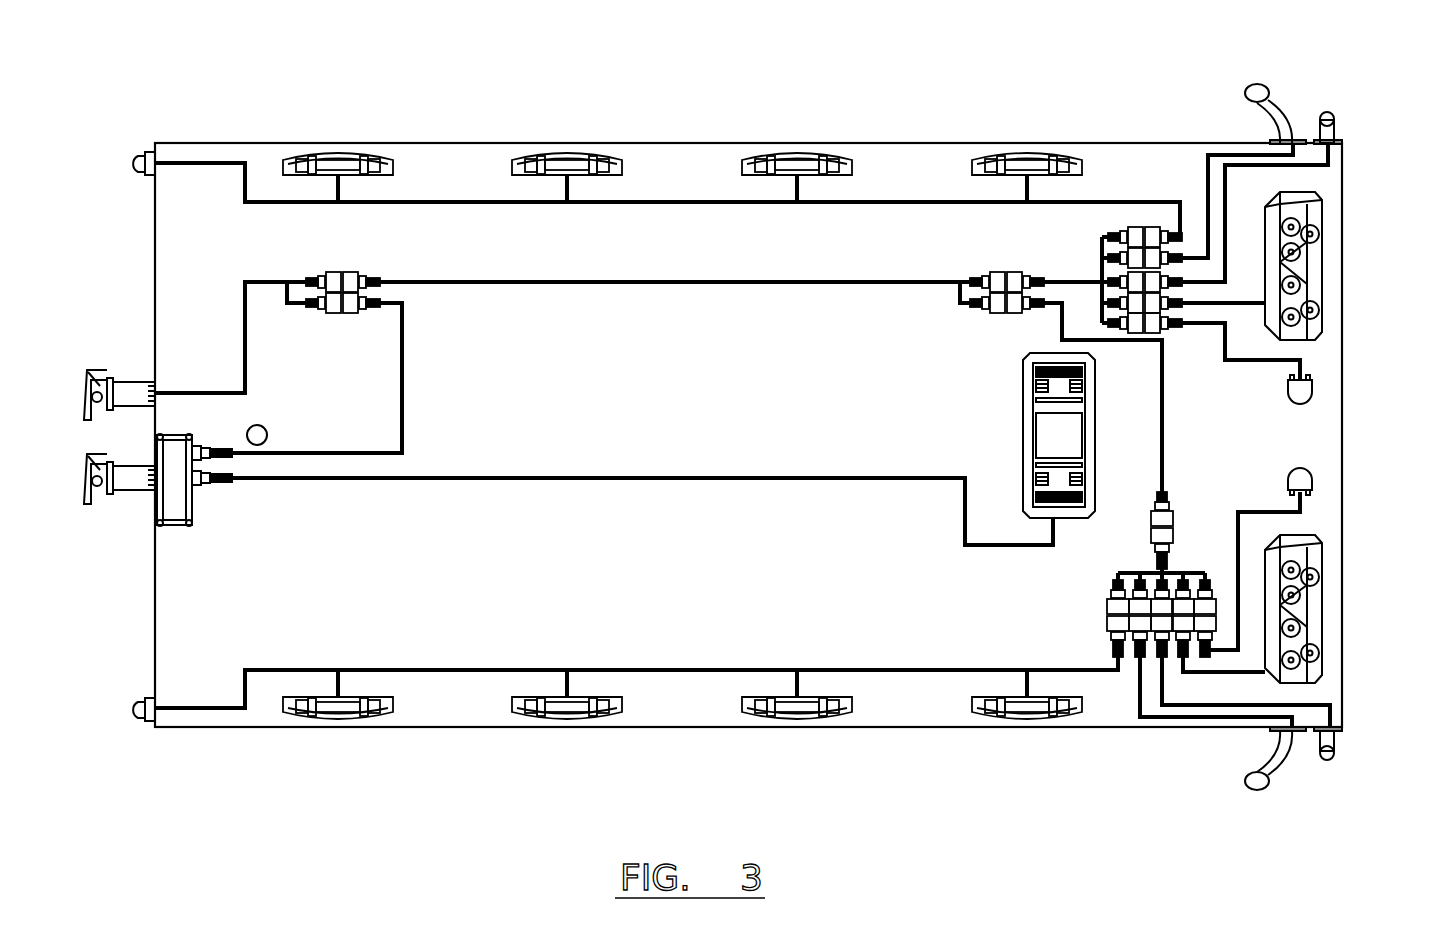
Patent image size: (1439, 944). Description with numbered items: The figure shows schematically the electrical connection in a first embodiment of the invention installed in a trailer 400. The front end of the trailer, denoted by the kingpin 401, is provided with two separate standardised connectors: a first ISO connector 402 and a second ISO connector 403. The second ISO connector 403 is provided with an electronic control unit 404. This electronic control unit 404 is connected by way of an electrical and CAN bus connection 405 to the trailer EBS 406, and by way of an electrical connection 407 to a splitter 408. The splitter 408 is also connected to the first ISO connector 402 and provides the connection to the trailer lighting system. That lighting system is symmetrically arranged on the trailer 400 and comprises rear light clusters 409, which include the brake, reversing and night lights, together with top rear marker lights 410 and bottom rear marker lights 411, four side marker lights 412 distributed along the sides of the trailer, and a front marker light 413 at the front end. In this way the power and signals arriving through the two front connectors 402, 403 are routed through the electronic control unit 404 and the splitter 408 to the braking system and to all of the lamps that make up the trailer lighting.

The trailer 400 is at (500, 748).
The kingpin 401 is at (266, 428).
The ISO 12098 connector 402 is at (97, 368).
The ISO 7638 connector 403 is at (105, 500).
The electronic control unit 404 is at (175, 527).
The electrical and CAN bus connection 405 is at (578, 482).
The trailer EBS 406 is at (1023, 430).
The electrical connection 407 is at (405, 382).
The splitter 408 is at (365, 275).
The rear light clusters 409 is at (1325, 255).
The top rear marker lights 410 is at (1335, 113).
The bottom rear marker lights 411 is at (1257, 85).
The side marker lights 412 is at (340, 150).
The front marker light 413 is at (135, 160).